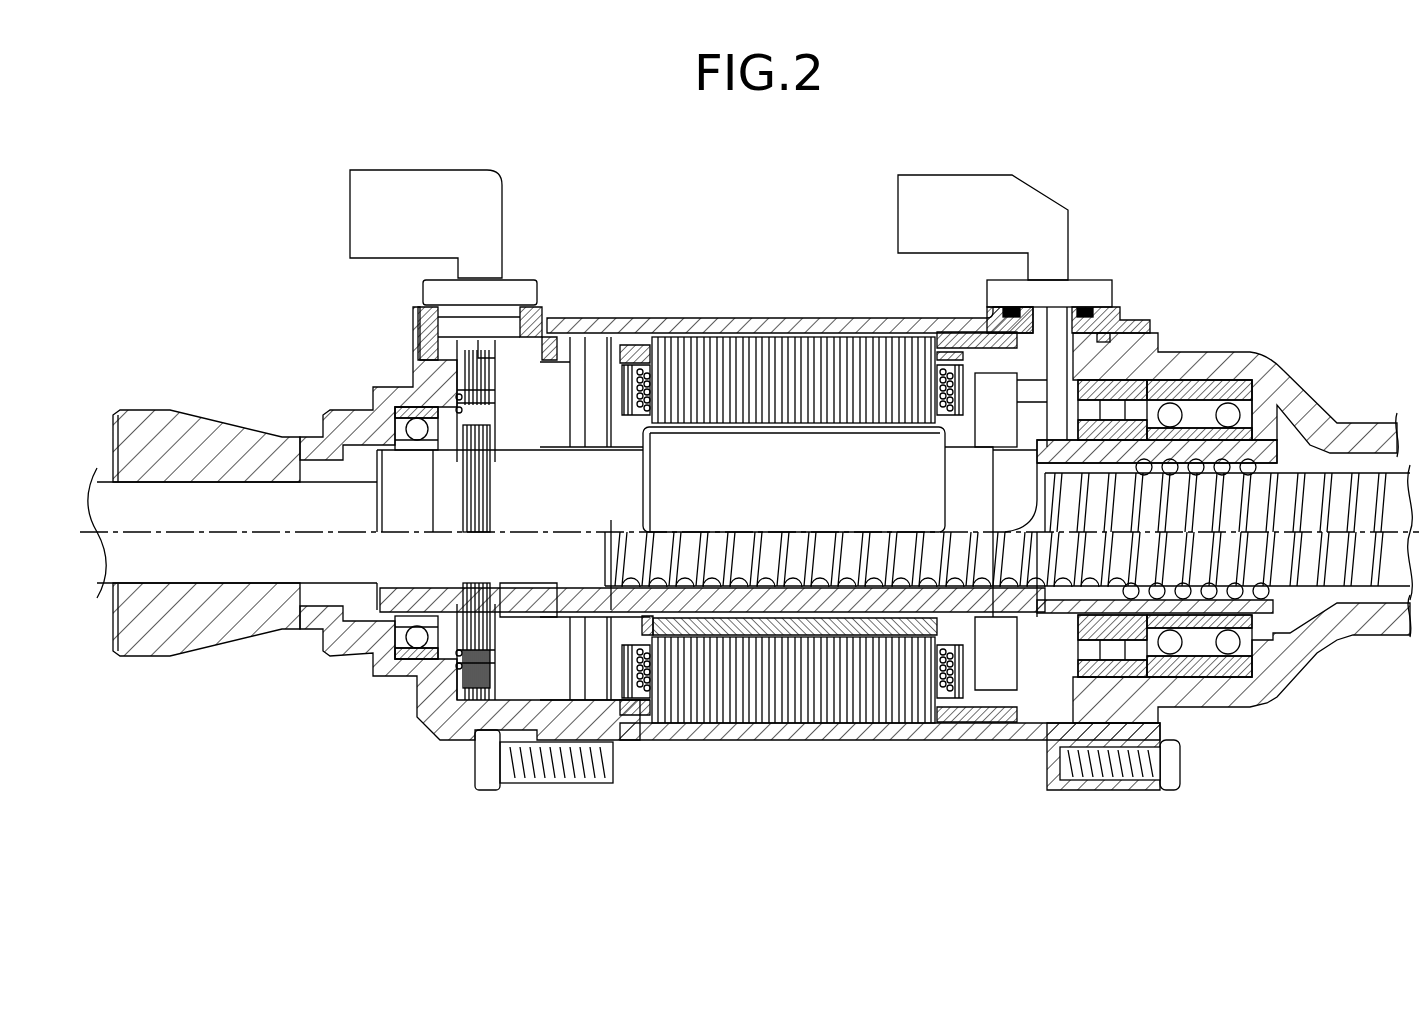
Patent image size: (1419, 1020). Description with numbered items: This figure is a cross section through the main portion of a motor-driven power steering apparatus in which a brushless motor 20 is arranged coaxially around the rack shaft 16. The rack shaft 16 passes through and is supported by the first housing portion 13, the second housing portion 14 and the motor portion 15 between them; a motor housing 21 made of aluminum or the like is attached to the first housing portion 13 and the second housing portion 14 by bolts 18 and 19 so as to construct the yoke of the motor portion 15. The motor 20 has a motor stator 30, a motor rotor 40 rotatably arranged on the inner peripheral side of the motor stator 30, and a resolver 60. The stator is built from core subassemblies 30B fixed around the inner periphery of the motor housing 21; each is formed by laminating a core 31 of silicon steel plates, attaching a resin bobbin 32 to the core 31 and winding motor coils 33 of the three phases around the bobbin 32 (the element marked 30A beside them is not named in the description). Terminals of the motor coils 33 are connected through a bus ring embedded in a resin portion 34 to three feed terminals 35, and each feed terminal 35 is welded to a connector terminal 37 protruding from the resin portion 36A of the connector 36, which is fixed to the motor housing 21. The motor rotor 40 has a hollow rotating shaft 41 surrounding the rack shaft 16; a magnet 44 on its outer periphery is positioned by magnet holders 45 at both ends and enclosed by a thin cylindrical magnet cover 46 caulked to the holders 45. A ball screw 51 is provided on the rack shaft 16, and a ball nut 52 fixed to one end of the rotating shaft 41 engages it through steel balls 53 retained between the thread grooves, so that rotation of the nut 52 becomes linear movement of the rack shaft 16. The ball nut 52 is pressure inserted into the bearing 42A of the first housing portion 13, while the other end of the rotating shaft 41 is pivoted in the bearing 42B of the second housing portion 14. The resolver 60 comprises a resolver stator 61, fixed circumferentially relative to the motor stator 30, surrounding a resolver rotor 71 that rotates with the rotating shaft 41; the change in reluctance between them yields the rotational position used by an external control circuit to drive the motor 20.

The first housing portion 13 is at (1366, 428).
The second housing portion 14 is at (387, 672).
The motor portion 15 is at (684, 318).
The rack shaft 16 is at (258, 560).
The bolt 18 is at (1170, 795).
The bolt 19 is at (485, 782).
The brushless motor 20 is at (757, 318).
The motor housing 21 is at (640, 332).
The motor stator 30 is at (806, 355).
The rotor magnet 30A is at (853, 355).
The core subassembly 30B is at (886, 355).
The core 31 is at (731, 343).
The resin bobbin 32 is at (626, 346).
The motor coil 33 is at (624, 412).
The resin portion 34 is at (983, 410).
The feed terminal 35 is at (1027, 402).
The connector 36 is at (960, 182).
The resin portion 36A is at (1057, 284).
The connector terminal 37 is at (1086, 325).
The motor rotor 40 is at (736, 638).
The hollow rotating shaft 41 is at (992, 650).
The bearing 42A is at (1262, 398).
The bearing 42B is at (410, 424).
The magnet 44 is at (813, 628).
The magnet holder 45 is at (640, 620).
The magnet cover 46 is at (874, 640).
The ball screw 51 is at (1293, 590).
The ball nut 52 is at (1258, 413).
The steel ball 53 is at (1208, 600).
The resolver 60 is at (455, 350).
The resolver stator 61 is at (448, 362).
The resolver rotor 71 is at (460, 455).